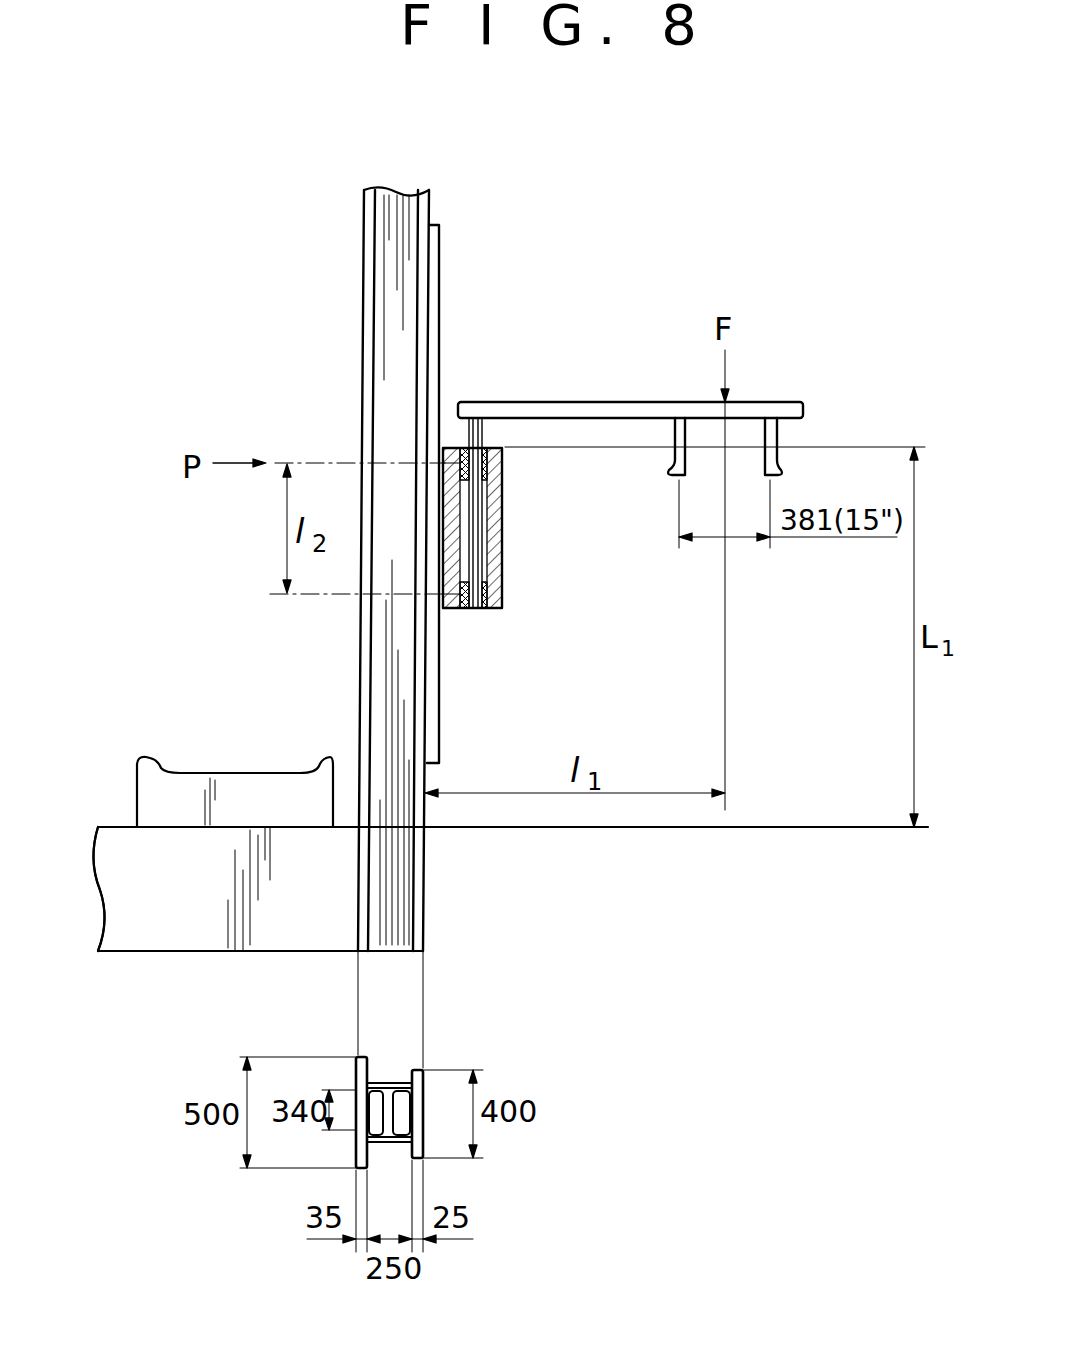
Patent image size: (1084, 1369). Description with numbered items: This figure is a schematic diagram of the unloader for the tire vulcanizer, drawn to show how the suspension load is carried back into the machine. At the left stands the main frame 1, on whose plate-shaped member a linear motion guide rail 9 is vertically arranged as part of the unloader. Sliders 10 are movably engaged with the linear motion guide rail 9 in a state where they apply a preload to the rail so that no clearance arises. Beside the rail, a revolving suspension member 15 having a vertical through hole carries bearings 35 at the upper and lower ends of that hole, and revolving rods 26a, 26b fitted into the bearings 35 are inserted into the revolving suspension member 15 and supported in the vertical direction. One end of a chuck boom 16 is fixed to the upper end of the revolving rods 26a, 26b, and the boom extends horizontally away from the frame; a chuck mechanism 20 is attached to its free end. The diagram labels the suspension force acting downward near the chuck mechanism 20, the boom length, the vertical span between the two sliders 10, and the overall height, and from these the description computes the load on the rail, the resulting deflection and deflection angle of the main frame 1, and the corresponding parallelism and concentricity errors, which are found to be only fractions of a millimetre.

The main frame 1 is at (412, 208).
The linear motion guide rail 9 is at (439, 278).
The slider 10 is at (447, 468).
The revolving suspension member 15 is at (496, 512).
The chuck boom 16 is at (543, 405).
The chuck mechanism 20 is at (765, 405).
The revolving rod 26a is at (471, 553).
The revolving rod 26b is at (480, 513).
The bearing 35 is at (503, 462).